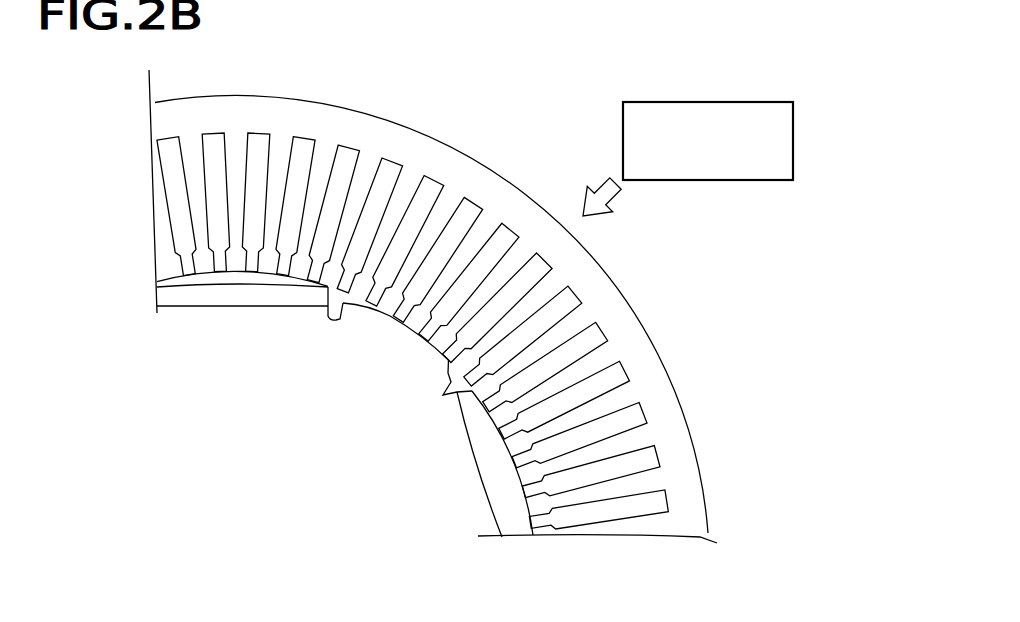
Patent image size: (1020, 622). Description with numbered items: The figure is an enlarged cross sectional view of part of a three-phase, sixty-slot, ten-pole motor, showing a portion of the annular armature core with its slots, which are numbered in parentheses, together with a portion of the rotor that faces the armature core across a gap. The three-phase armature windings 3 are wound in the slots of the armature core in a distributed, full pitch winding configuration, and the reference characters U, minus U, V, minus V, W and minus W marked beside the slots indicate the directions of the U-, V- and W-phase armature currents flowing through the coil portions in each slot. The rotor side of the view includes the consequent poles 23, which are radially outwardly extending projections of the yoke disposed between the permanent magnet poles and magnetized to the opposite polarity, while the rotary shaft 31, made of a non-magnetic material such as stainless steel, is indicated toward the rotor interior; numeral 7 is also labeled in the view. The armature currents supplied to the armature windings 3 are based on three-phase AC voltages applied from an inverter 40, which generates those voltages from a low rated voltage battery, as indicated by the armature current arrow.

The three-phase armature windings 3 is at (534, 164).
The rotor 7 is at (311, 160).
The consequent poles 23 is at (536, 268).
The rotary shaft 31 is at (456, 207).
The inverter 40 is at (706, 102).